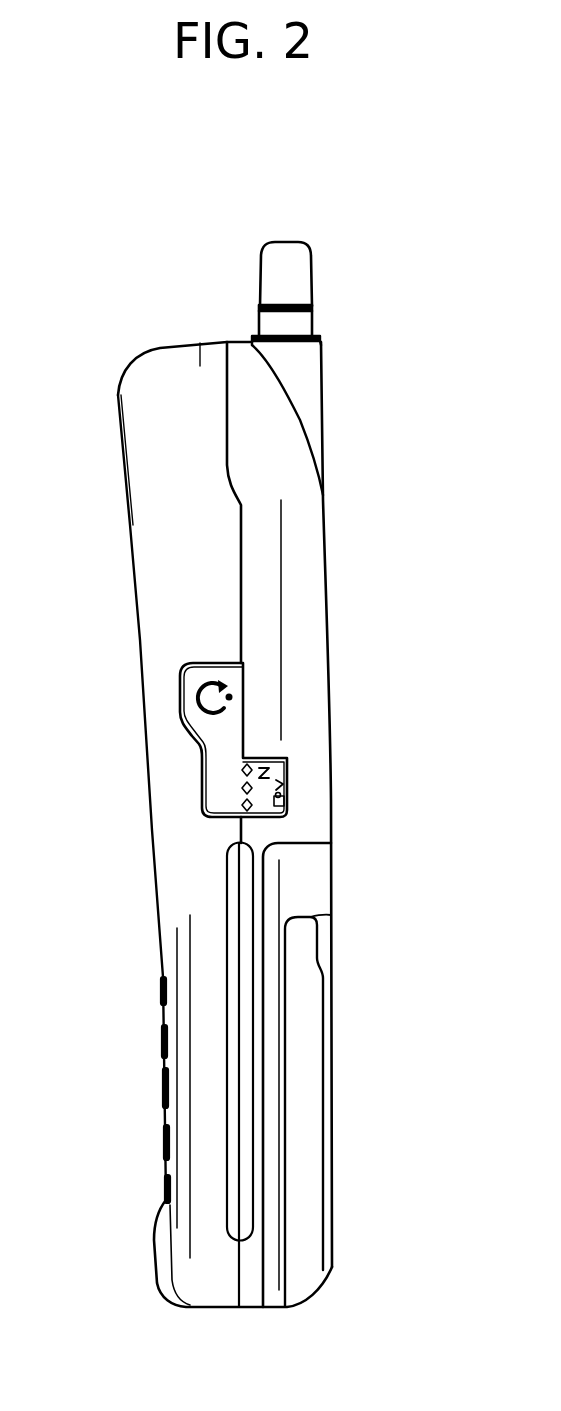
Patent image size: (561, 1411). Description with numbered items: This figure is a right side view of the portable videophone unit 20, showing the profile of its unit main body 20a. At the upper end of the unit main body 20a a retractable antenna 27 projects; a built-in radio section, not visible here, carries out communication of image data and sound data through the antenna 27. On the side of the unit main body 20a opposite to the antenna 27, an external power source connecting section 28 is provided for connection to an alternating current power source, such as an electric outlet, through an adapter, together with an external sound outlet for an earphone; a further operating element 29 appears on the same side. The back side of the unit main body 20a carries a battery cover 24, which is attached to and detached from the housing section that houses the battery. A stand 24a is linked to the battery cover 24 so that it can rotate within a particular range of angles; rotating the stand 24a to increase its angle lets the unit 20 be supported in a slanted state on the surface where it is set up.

The portable videophone unit 20 is at (426, 334).
The unit main body 20a is at (326, 635).
The retractable antenna 27 is at (302, 281).
The external power source connecting section 28 is at (320, 763).
The rotary operation key 29 is at (180, 697).
The battery cover 24 is at (306, 882).
The stand 24a is at (313, 1165).